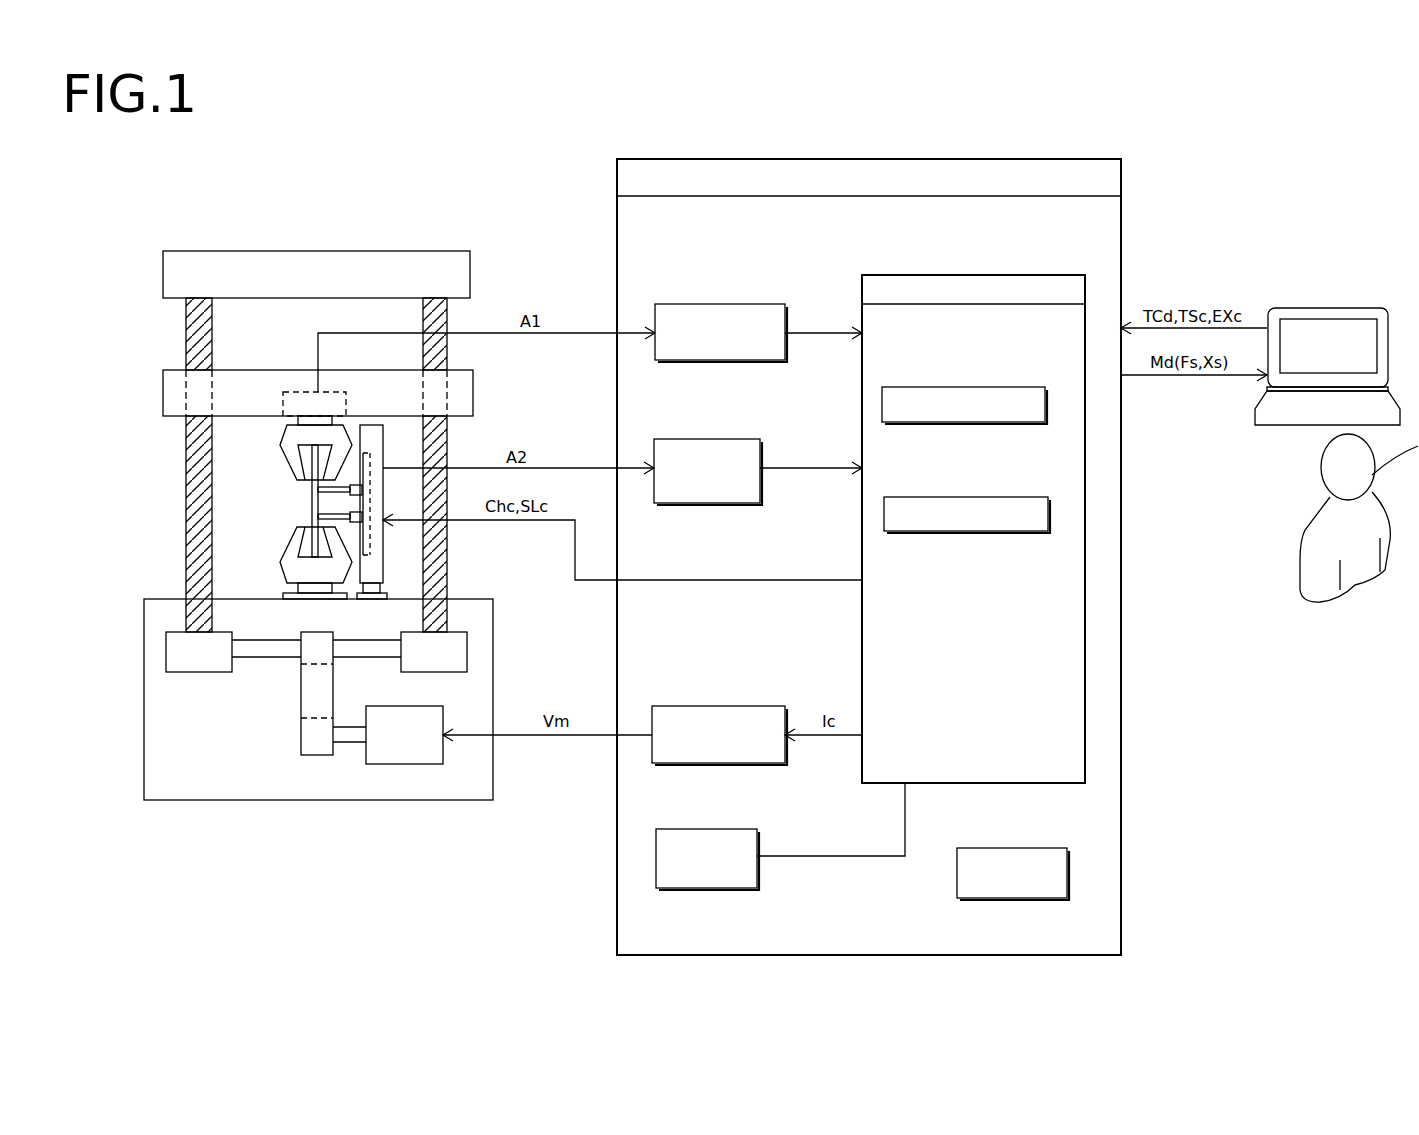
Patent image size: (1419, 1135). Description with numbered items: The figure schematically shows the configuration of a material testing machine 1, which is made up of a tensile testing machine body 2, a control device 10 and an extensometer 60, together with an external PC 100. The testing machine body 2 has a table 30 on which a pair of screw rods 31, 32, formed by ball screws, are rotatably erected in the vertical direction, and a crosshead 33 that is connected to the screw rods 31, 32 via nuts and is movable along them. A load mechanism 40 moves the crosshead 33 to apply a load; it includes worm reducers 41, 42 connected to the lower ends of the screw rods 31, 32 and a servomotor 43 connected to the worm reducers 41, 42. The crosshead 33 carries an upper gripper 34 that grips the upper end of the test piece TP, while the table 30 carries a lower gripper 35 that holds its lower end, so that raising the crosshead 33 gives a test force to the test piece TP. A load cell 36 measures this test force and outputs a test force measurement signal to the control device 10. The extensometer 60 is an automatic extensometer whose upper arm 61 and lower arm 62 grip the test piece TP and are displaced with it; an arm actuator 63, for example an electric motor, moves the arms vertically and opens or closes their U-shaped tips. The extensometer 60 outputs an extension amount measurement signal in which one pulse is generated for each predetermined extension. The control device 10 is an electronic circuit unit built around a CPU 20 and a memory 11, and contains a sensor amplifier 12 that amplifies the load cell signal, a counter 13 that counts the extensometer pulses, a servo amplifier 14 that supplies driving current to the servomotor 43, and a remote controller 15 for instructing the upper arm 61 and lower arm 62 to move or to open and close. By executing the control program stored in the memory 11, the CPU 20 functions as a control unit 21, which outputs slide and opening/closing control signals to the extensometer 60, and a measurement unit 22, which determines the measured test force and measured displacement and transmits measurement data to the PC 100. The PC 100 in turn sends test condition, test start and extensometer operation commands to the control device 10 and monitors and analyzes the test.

The material testing machine 1 is at (476, 155).
The tensile testing machine body 2 is at (308, 250).
The control device 10 is at (872, 159).
The memory 11 is at (1007, 848).
The sensor amplifier 12 is at (718, 304).
The counter 13 is at (706, 439).
The servo amplifier 14 is at (712, 706).
The remote controller 15 is at (706, 829).
The CPU 20 is at (972, 275).
The control unit 21 is at (960, 387).
The measurement unit 22 is at (958, 497).
The table 30 is at (210, 800).
The screw rod 31 is at (186, 525).
The screw rod 32 is at (447, 557).
The crosshead 33 is at (170, 395).
The upper gripper 34 is at (283, 450).
The lower gripper 35 is at (283, 557).
The load cell 36 is at (300, 392).
The load mechanism 40 is at (265, 750).
The worm reducer 41 is at (197, 672).
The worm reducer 42 is at (467, 652).
The servomotor 43 is at (378, 765).
The extensometer 60 is at (383, 573).
The upper arm 61 is at (312, 490).
The lower arm 62 is at (312, 517).
The arm actuator 63 is at (372, 505).
The PC 100 is at (1317, 308).
The test piece TP is at (312, 505).